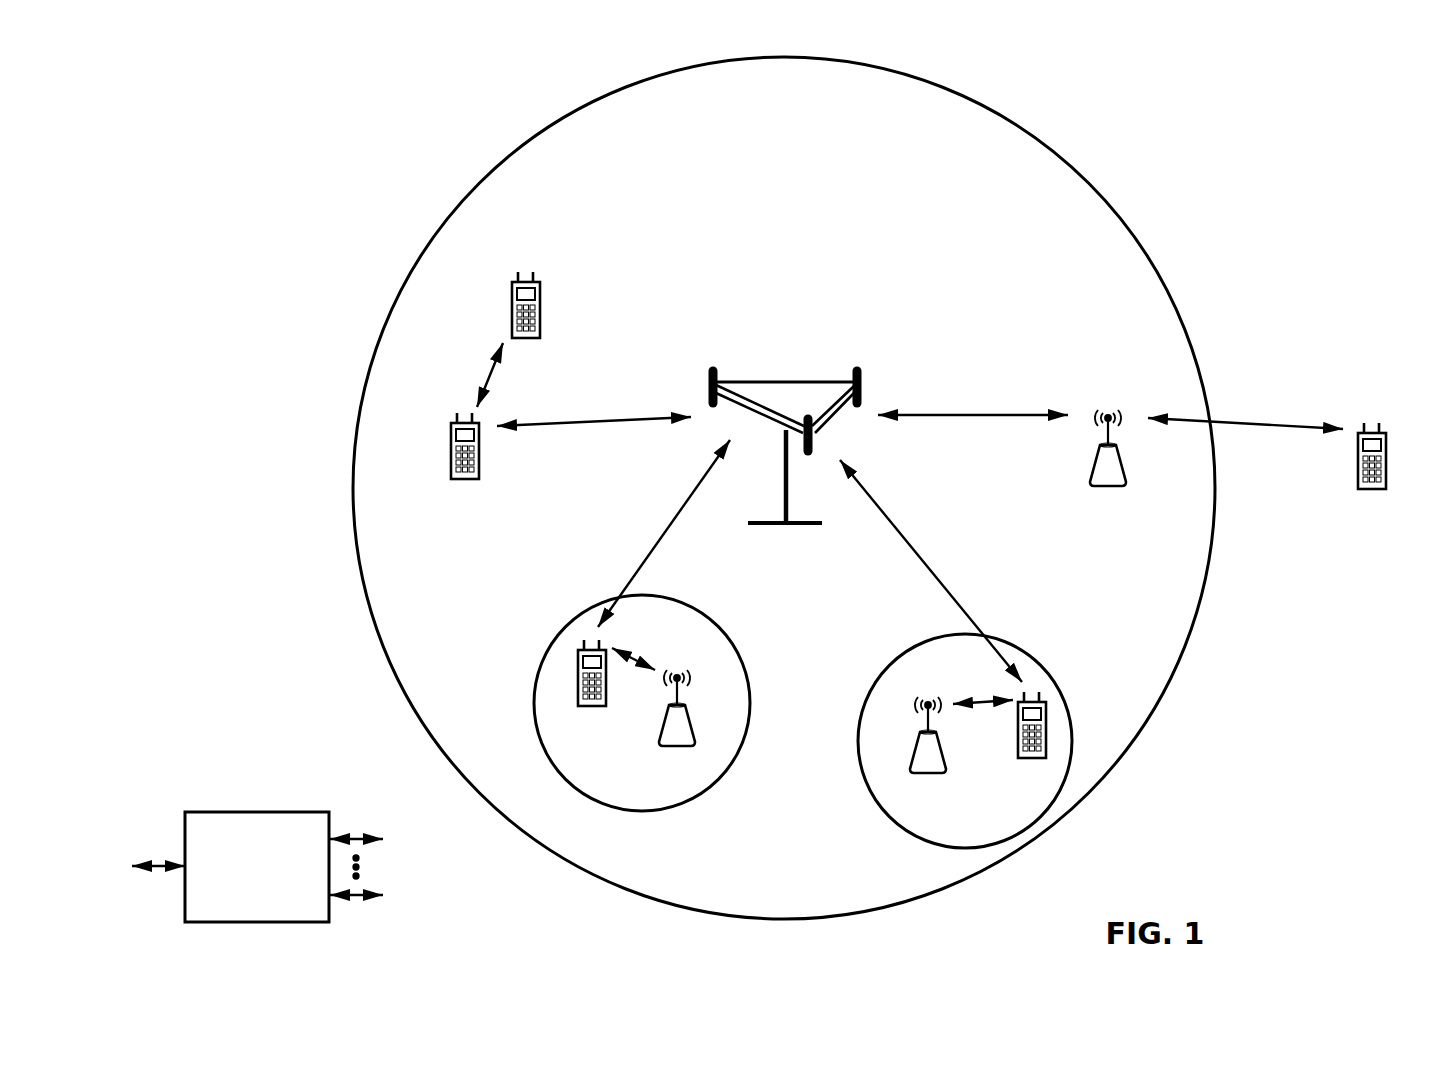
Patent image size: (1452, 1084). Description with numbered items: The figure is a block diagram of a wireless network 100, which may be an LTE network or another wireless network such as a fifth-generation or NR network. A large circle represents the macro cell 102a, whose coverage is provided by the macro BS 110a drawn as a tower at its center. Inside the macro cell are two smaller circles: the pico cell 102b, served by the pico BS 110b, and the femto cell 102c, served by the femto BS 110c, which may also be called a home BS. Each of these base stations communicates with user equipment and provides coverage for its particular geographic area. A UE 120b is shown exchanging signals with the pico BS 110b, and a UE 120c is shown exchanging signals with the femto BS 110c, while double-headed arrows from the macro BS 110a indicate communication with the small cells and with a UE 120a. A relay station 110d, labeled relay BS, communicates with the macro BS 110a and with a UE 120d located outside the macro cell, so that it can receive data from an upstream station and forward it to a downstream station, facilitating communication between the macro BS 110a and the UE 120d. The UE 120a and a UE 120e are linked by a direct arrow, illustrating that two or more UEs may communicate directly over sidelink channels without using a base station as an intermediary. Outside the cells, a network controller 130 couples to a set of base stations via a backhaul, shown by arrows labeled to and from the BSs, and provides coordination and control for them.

The wireless network 100 is at (1309, 115).
The macro cell 102a is at (1070, 160).
The pico cell 102b is at (722, 630).
The femto cell 102c is at (885, 667).
The macro BS 110a is at (781, 381).
The pico BS 110b is at (696, 729).
The femto BS 110c is at (911, 756).
The relay station 110d is at (1108, 413).
The UE 120a is at (450, 432).
The UE 120b is at (578, 695).
The UE 120c is at (1018, 750).
The UE 120d is at (1389, 445).
The UE 120e is at (511, 291).
The network controller 130 is at (248, 812).